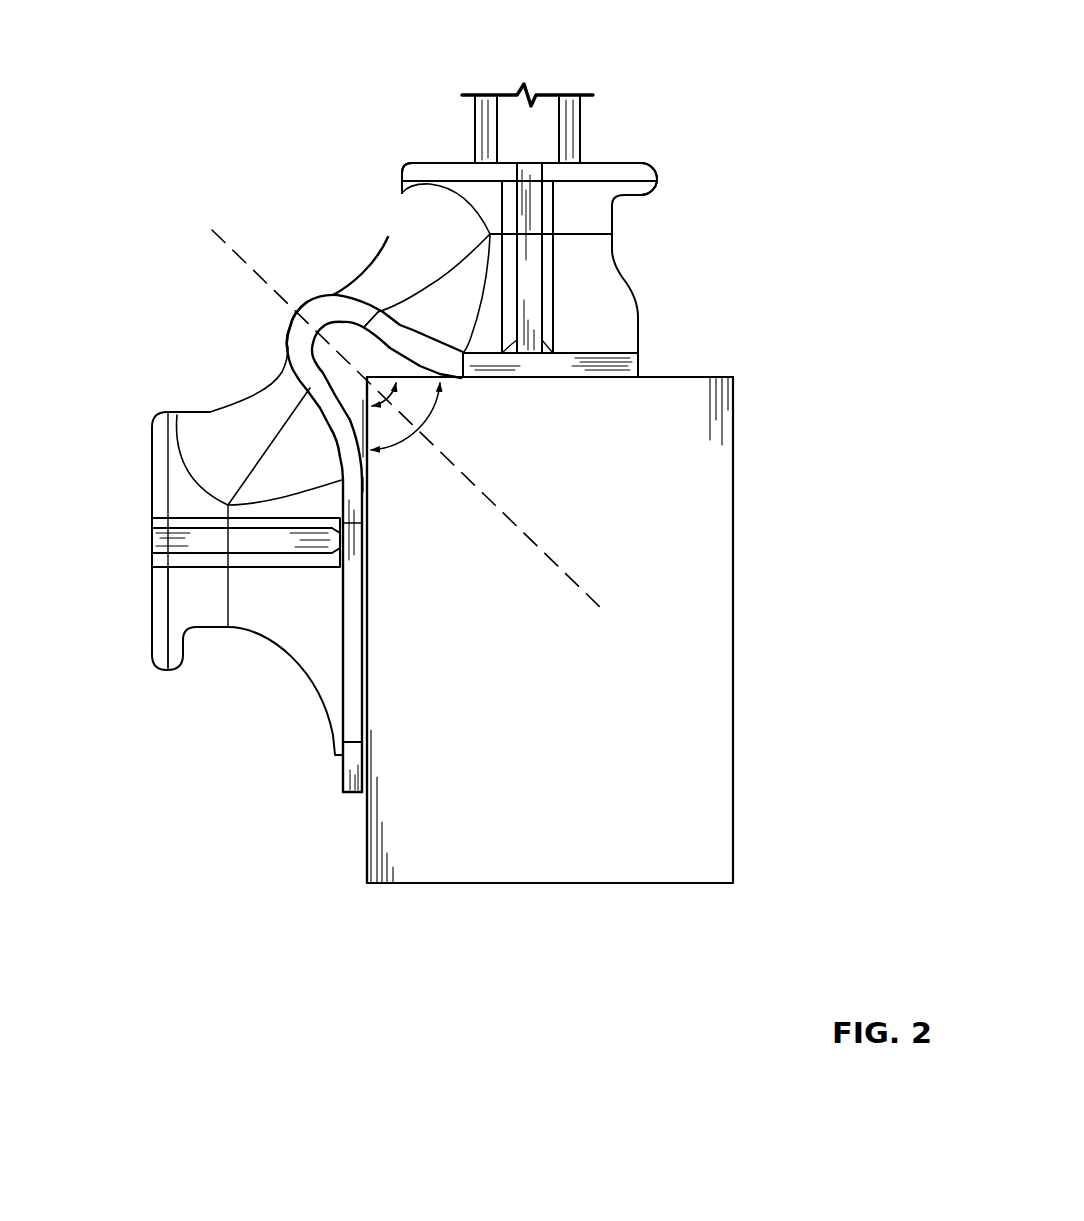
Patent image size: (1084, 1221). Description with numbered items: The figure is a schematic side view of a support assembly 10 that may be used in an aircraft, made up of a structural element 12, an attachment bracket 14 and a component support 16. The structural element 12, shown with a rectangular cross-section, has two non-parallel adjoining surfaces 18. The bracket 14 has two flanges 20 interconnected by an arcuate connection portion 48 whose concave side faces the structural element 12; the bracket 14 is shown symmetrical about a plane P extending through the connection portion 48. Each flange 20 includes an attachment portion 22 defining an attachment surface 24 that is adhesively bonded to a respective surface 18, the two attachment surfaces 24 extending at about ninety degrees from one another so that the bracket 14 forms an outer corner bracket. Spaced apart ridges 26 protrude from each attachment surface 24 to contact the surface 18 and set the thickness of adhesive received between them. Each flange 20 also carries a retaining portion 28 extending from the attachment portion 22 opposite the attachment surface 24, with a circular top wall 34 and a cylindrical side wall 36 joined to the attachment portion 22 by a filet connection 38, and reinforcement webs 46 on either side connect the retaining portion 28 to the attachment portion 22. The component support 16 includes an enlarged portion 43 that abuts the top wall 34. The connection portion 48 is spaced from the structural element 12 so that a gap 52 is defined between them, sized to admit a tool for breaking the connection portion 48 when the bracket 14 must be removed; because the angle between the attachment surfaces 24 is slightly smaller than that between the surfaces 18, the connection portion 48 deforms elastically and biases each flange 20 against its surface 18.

The support assembly 10 is at (800, 148).
The structural element 12 is at (706, 648).
The attachment bracket 14 is at (640, 138).
The component support 16 is at (460, 130).
The adjoining surfaces 18 is at (683, 378).
The flanges 20 is at (410, 268).
The attachment portion 22 is at (592, 350).
The attachment surface 24 is at (583, 377).
The ridges 26 is at (367, 543).
The retaining portion 28 is at (148, 688).
The top wall 34 is at (427, 163).
The side wall 36 is at (243, 601).
The filet connection 38 is at (322, 668).
The enlarged portion 43 is at (580, 122).
The reinforcement webs 46 is at (177, 543).
The connection portion 48 is at (325, 288).
The gap 52 is at (310, 350).
The plane of symmetry P is at (214, 228).